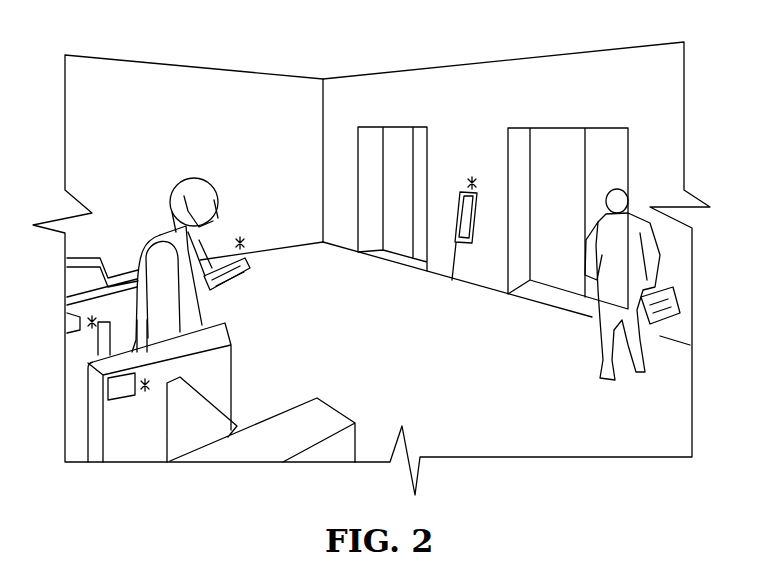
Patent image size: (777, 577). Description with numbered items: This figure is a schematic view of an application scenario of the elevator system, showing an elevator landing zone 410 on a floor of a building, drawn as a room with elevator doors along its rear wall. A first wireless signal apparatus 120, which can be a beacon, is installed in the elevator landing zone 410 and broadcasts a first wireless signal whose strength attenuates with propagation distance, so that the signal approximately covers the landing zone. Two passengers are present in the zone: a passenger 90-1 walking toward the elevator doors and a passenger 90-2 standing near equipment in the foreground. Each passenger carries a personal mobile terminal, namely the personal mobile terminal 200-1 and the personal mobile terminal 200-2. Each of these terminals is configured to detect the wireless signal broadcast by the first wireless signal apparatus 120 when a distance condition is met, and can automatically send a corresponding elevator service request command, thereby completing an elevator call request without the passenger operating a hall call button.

The elevator landing zone 410 is at (258, 60).
The first wireless signal apparatus 120 is at (450, 238).
The passenger 90-1 is at (636, 208).
The passenger 90-2 is at (172, 178).
The personal mobile terminal 200-1 is at (661, 318).
The personal mobile terminal 200-2 is at (248, 262).